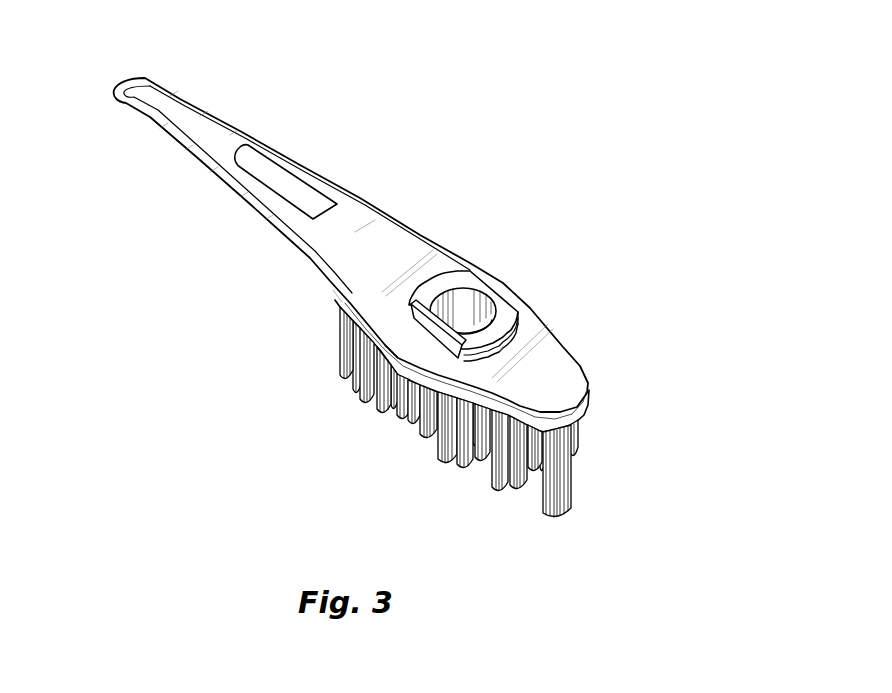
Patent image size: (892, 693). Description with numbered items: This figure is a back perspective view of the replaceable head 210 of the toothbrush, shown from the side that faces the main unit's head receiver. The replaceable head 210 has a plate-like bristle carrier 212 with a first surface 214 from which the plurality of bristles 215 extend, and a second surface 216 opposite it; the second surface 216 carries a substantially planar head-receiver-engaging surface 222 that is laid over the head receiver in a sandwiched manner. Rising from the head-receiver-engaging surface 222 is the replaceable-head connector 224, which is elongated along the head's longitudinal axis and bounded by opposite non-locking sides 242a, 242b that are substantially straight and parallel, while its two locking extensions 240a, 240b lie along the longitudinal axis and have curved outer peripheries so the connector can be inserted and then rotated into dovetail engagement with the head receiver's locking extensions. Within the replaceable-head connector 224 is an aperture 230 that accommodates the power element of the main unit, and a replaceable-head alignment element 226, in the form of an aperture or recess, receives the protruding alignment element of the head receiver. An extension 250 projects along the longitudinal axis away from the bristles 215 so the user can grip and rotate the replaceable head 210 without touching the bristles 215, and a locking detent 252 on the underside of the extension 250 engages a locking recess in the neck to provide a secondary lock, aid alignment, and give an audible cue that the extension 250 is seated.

The replaceable head 210 is at (415, 258).
The bristle carrier 212 is at (438, 271).
The first surface 214 is at (337, 298).
The bristles 215 is at (507, 412).
The second surface 216 is at (368, 232).
The head-receiver-engaging surface 222 is at (406, 278).
The replaceable-head connector 224 is at (347, 365).
The replaceable-head alignment element 226 is at (496, 256).
The aperture 230 is at (448, 317).
The locking extension 240a is at (500, 352).
The locking extension 240b is at (405, 331).
The non-locking side 242a is at (501, 291).
The non-locking side 242b is at (414, 378).
The extension 250 is at (351, 206).
The locking detent 252 is at (258, 158).